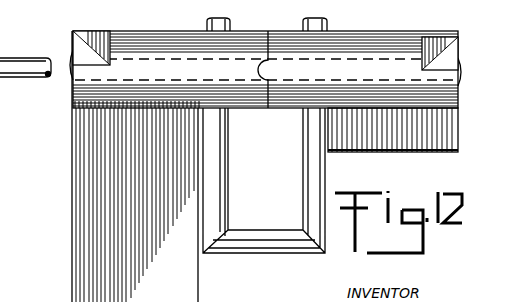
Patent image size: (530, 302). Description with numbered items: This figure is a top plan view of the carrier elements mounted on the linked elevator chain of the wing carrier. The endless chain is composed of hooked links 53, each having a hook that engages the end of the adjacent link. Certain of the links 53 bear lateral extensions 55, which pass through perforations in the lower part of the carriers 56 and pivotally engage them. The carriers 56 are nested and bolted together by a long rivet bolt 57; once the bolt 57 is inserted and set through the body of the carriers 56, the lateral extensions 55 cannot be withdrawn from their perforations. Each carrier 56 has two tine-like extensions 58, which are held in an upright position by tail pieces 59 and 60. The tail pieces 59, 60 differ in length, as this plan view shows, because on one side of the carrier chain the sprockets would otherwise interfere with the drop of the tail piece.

The hooked link 53 is at (228, 161).
The lateral extension 55 is at (11, 56).
The carrier 56 is at (72, 100).
The rivet bolt 57 is at (355, 67).
The tine-like extension 58 is at (438, 62).
The tail piece 59 is at (70, 213).
The tail piece 60 is at (407, 146).